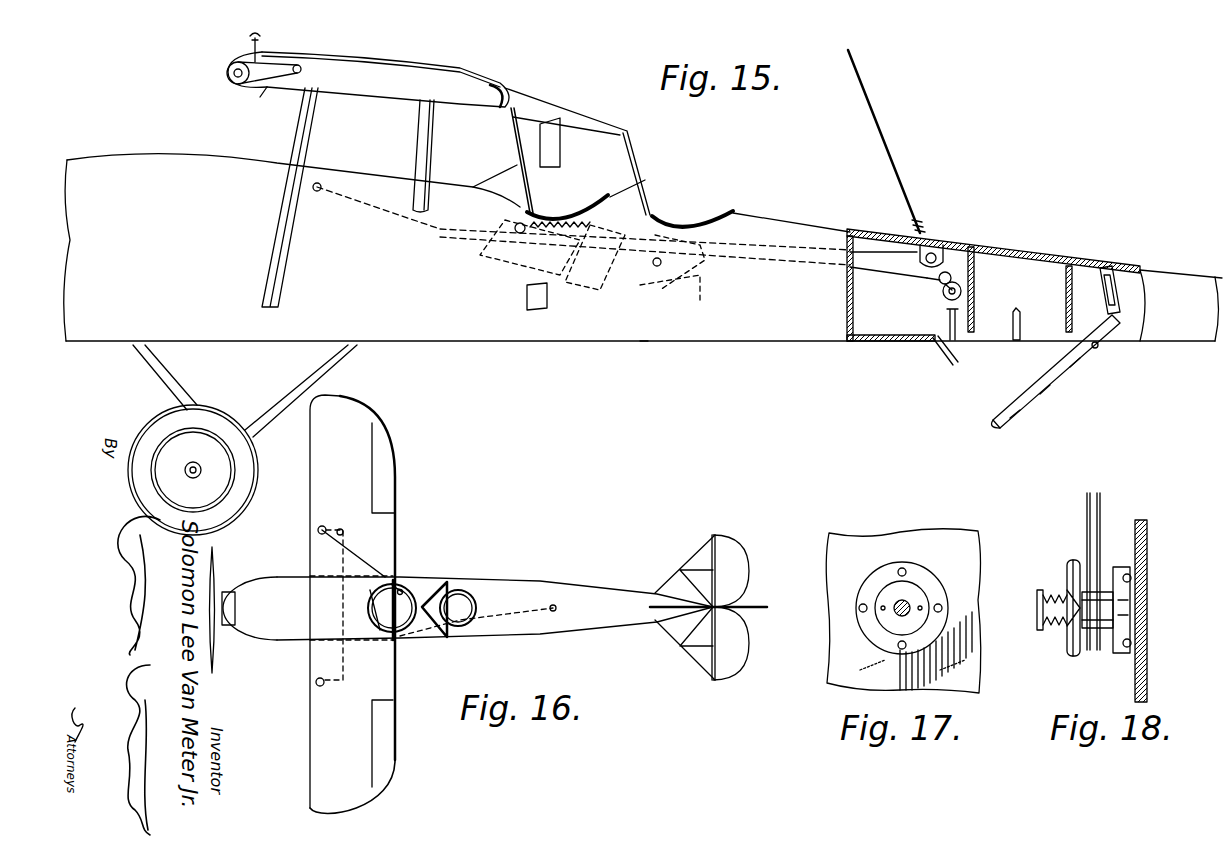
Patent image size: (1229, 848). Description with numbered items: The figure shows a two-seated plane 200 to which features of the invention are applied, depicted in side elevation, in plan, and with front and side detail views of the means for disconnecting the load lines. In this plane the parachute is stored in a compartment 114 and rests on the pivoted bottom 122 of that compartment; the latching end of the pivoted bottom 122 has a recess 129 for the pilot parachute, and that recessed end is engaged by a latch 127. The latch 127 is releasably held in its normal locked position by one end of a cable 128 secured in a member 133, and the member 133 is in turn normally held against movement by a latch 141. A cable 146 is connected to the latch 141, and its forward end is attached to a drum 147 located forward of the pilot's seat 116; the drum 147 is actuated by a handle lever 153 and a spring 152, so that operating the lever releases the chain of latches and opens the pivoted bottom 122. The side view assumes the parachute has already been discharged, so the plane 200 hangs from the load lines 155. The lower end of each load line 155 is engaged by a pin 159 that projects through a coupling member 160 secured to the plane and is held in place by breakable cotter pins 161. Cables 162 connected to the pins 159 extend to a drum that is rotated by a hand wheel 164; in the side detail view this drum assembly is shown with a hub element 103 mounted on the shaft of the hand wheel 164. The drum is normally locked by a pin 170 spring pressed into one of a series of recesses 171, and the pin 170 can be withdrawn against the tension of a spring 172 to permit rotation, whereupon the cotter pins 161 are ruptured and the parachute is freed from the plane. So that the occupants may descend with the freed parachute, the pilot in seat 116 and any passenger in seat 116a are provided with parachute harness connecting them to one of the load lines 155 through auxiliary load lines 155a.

In FIG. 15, the load lines 155 is at (268, 40).
In FIG. 16, the load lines 155 is at (345, 515).
In FIG. 15, the auxiliary load lines 155a is at (560, 142).
In FIG. 16, the auxiliary load lines 155a is at (418, 590).
In FIG. 15, the breakable cotter pins 161 is at (232, 70).
In FIG. 15, the pin 159 is at (267, 88).
In FIG. 15, the cables 162 is at (312, 170).
In FIG. 15, the handle lever 153 is at (535, 205).
In FIG. 15, the drum 147 is at (520, 227).
In FIG. 15, the spring 152 is at (592, 255).
In FIG. 15, the pilot's seat 116 is at (510, 296).
In FIG. 15, the passenger seat 116a is at (670, 298).
In FIG. 15, the plane 200 is at (652, 331).
In FIG. 15, the cable 146 is at (886, 270).
In FIG. 15, the coupling members 160 is at (955, 278).
In FIG. 15, the compartment 114 is at (1070, 290).
In FIG. 15, the latch 141 is at (972, 288).
In FIG. 15, the member 133 is at (943, 293).
In FIG. 15, the cable 128 is at (948, 323).
In FIG. 15, the latch 127 is at (944, 358).
In FIG. 15, the pivoted bottom 122 is at (1033, 402).
In FIG. 15, the recess 129 is at (987, 436).
In FIG. 17, the pin 170 is at (900, 590).
In FIG. 18, the pin 170 is at (1120, 572).
In FIG. 17, the recesses 171 is at (921, 605).
In FIG. 18, the recesses 171 is at (1122, 607).
In FIG. 18, the hand wheel 164 is at (1070, 565).
In FIG. 18, the spring 172 is at (1052, 630).
In FIG. 18, the hub 103 is at (1098, 628).